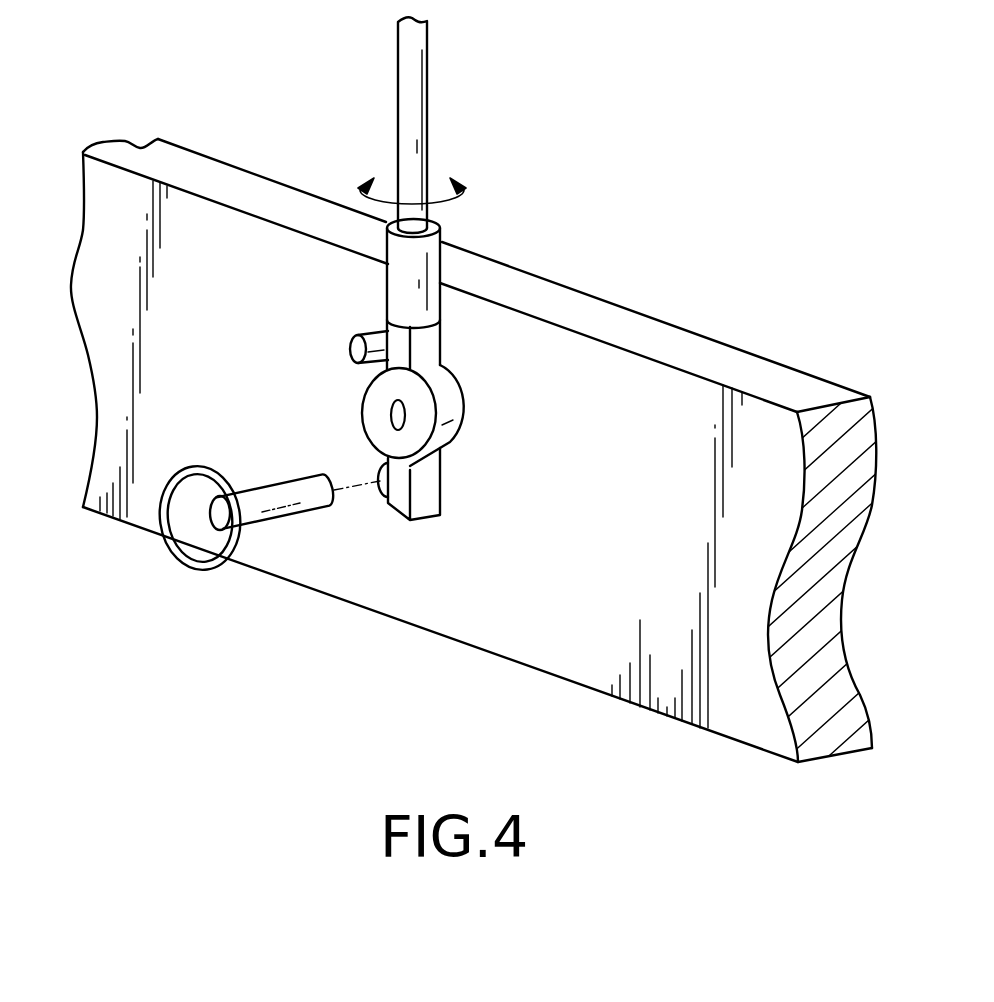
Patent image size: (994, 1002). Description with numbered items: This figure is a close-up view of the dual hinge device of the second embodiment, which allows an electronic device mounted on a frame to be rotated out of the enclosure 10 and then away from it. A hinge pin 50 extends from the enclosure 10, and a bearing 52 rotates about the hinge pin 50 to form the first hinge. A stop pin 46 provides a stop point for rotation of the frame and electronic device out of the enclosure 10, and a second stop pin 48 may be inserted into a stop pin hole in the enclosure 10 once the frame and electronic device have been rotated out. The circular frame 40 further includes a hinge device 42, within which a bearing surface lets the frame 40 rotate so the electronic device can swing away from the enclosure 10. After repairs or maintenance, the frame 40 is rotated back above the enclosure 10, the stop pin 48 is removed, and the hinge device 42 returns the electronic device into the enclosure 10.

The enclosure 10 is at (588, 690).
The frame 40 is at (428, 113).
The hinge device 42 is at (441, 224).
The stop pin 46 is at (357, 340).
The stop pin 48 is at (266, 490).
The hinge pin 50 is at (391, 417).
The bearing 52 is at (458, 450).